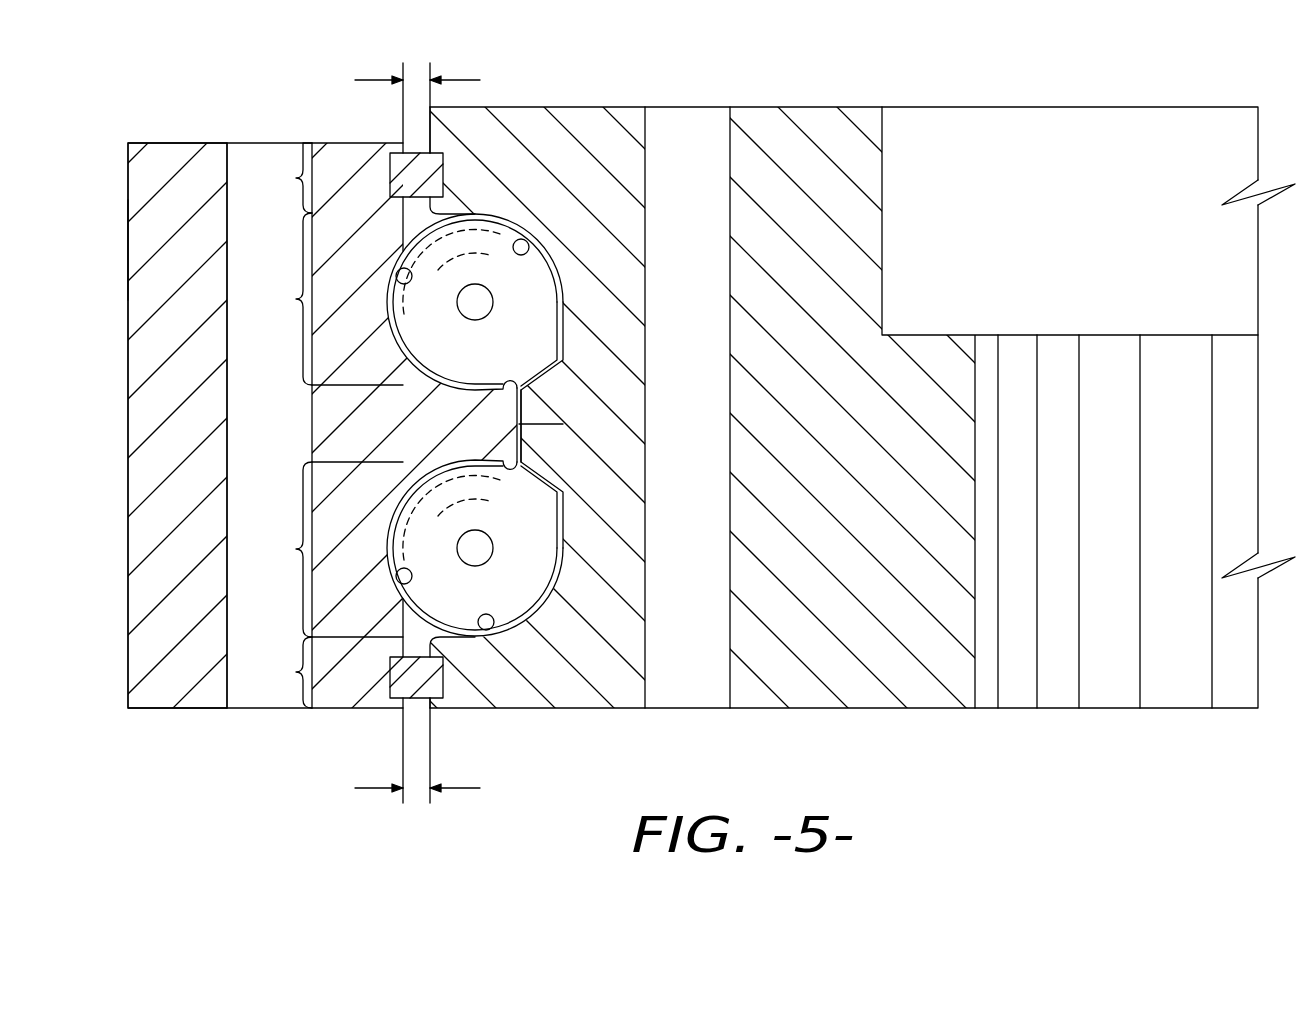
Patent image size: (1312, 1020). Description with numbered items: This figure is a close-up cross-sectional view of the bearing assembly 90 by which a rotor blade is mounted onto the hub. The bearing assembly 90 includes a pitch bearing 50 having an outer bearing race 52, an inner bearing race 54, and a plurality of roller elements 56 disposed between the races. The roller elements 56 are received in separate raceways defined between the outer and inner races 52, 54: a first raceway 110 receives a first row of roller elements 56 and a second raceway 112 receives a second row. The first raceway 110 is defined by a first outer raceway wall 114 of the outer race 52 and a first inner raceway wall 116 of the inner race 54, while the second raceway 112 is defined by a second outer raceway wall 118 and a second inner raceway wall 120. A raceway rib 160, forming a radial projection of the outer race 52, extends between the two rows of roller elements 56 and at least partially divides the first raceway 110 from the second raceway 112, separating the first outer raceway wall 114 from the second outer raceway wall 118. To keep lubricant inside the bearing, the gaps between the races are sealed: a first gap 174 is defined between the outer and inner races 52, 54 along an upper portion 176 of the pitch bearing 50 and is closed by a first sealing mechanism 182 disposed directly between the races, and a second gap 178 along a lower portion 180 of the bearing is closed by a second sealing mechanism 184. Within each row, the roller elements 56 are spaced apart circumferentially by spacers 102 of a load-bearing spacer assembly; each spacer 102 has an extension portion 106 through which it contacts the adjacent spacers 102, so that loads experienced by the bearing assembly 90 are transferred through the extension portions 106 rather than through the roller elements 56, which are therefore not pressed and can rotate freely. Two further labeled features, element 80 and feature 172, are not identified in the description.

The pitch bearing 50 is at (168, 143).
The outer bearing race 52 is at (128, 280).
The inner bearing race 54 is at (816, 122).
The roller elements 56 is at (478, 547).
The laminated section 80 is at (1079, 681).
The bearing assembly 90 is at (226, 106).
The spacer 102 is at (566, 305).
The extension portion 106 is at (548, 413).
The first raceway 110 is at (316, 299).
The second raceway 112 is at (316, 549).
The first outer raceway wall 114 is at (407, 274).
The first inner raceway wall 116 is at (520, 276).
The second outer raceway wall 118 is at (404, 580).
The second inner raceway wall 120 is at (489, 622).
The raceway rib 160 is at (520, 436).
The channel wall 172 is at (520, 404).
The first gap 174 is at (418, 75).
The upper portion 176 is at (270, 178).
The second gap 178 is at (418, 790).
The lower portion 180 is at (316, 672).
The first sealing mechanism 182 is at (446, 165).
The second sealing mechanism 184 is at (448, 690).